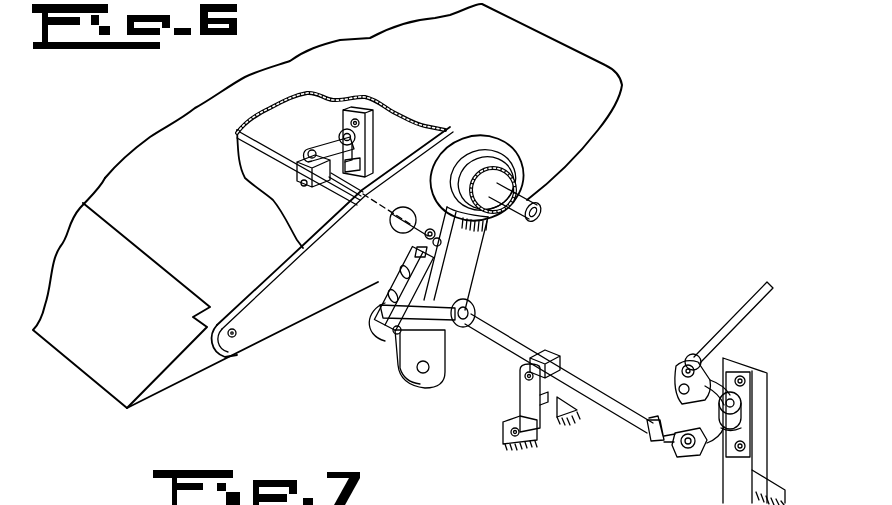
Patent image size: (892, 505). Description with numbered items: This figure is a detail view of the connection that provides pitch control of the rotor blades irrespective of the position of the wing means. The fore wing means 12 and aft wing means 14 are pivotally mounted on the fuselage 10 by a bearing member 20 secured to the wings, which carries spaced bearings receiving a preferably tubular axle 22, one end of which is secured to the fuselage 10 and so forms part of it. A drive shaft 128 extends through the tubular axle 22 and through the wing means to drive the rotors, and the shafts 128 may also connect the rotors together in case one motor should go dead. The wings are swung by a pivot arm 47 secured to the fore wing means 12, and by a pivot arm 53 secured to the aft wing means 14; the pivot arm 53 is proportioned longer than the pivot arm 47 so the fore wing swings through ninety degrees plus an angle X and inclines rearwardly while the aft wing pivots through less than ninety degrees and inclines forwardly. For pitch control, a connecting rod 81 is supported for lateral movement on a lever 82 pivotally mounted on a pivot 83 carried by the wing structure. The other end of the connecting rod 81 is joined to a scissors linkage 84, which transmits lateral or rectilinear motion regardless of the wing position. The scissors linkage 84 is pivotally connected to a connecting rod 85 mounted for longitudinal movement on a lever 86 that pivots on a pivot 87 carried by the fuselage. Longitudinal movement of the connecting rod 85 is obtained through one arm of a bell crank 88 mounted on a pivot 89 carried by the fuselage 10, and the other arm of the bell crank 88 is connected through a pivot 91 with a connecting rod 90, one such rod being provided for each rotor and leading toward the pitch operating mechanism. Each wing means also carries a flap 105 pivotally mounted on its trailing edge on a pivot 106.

The fuselage 10 is at (733, 480).
The fore wing means 12 is at (612, 117).
The aft wing means 14 is at (356, 261).
The bearing member 20 is at (517, 160).
The axle 22 is at (500, 212).
The pivot arm 47 is at (463, 263).
The pivot arm 53 is at (484, 265).
The connecting rod 81 is at (413, 238).
The lever 82 is at (327, 143).
The pivot 83 is at (356, 135).
The scissors linkage 84 is at (397, 340).
The connecting rod 85 is at (593, 397).
The lever 86 is at (521, 388).
The pivot 87 is at (519, 413).
The bell crank 88 is at (713, 447).
The pivot 89 is at (741, 403).
The connecting rod 90 is at (753, 302).
The pivot 91 is at (693, 360).
The flap 105 is at (188, 368).
The pivot 106 is at (235, 337).
The drive shaft 128 is at (540, 198).